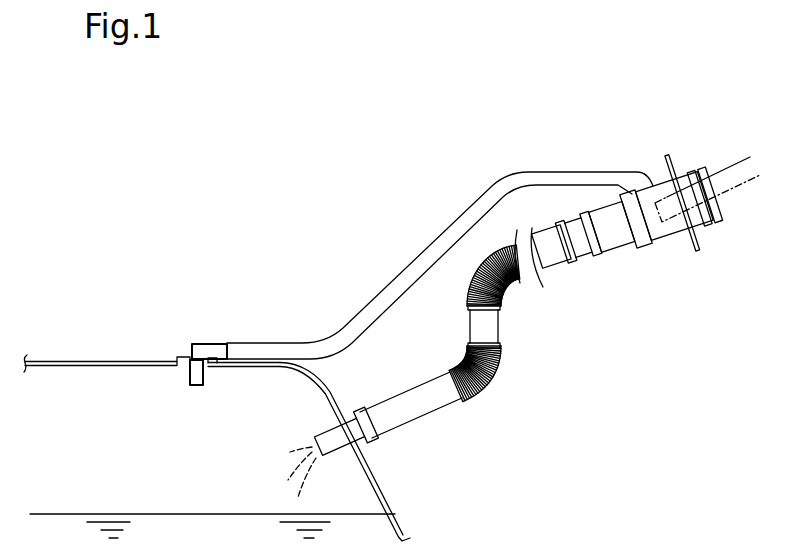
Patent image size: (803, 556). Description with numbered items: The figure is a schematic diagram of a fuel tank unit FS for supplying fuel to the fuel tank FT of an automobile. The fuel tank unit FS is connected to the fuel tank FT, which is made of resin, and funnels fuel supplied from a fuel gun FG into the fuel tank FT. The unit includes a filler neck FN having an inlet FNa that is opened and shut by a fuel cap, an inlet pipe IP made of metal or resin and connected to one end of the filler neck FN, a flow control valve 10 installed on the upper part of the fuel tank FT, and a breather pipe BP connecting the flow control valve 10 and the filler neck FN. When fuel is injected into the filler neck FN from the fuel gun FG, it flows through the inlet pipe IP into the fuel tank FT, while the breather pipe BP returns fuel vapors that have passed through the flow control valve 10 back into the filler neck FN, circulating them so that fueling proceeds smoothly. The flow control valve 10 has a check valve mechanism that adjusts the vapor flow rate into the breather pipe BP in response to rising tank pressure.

The fuel tank FT is at (68, 358).
The flow control valve 10 is at (205, 343).
The fuel tank unit FS is at (275, 329).
The breather pipe BP is at (394, 284).
The inlet pipe IP is at (498, 327).
The filler neck FN is at (668, 237).
The inlet FNa is at (713, 208).
The fuel gun FG is at (721, 163).